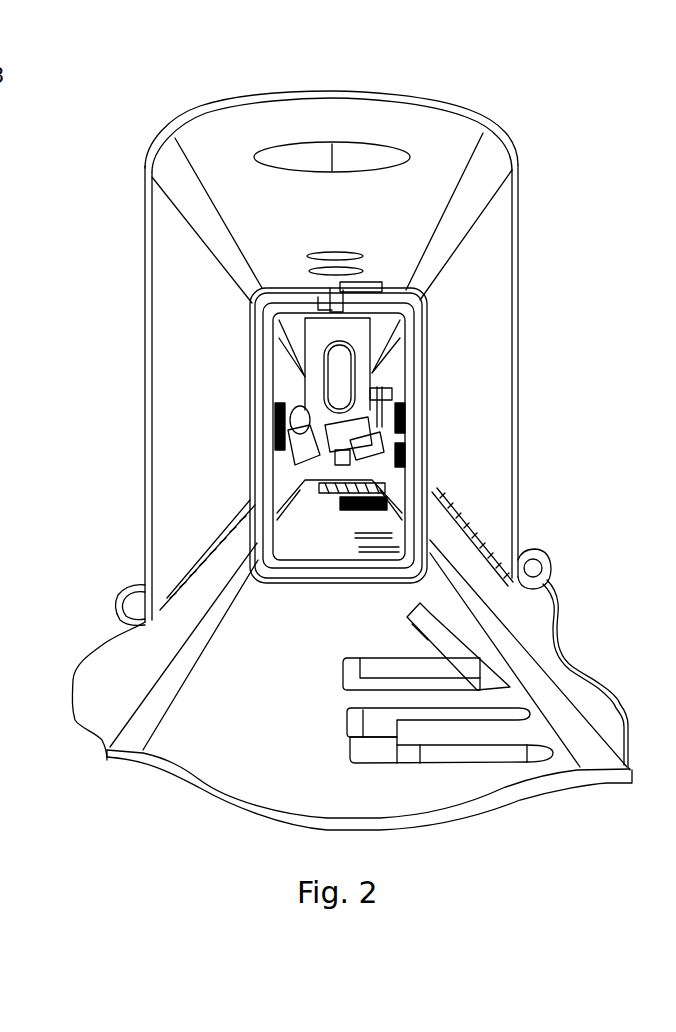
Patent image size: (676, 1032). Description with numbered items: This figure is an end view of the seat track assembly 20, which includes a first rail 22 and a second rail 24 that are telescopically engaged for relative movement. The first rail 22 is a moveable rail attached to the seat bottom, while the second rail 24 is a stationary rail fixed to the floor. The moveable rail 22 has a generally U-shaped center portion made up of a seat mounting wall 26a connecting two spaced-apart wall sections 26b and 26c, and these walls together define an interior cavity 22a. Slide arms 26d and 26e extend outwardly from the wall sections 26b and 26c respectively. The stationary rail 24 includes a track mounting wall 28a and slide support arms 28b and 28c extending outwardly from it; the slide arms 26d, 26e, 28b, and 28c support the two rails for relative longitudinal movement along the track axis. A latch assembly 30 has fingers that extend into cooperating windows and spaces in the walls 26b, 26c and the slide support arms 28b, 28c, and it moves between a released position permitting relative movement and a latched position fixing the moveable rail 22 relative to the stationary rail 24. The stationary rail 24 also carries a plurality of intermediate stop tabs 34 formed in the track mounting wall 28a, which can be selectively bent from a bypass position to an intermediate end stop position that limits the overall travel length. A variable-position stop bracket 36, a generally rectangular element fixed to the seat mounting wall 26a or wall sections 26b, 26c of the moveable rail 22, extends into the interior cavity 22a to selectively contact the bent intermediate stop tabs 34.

The seat track assembly 20 is at (322, 442).
The first rail 22 is at (342, 404).
The interior cavity 22a is at (219, 172).
The second rail 24 is at (322, 712).
The seat mounting wall 26a is at (394, 93).
The wall section 26b is at (500, 302).
The wall section 26c is at (165, 365).
The slide arm 26d is at (536, 566).
The slide arm 26e is at (130, 597).
The track mounting wall 28a is at (247, 735).
The slide support arm 28b is at (602, 702).
The slide support arm 28c is at (110, 700).
The latch assembly 30 is at (313, 488).
The intermediate stop tabs 34 is at (420, 630).
The variable-position stop bracket 36 is at (417, 345).